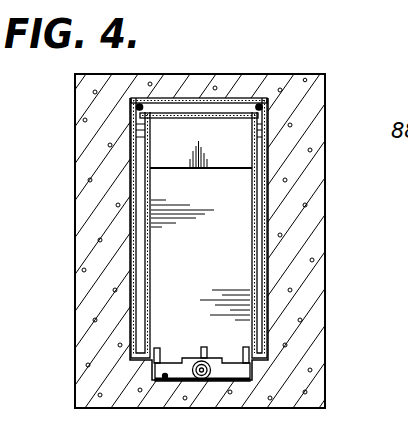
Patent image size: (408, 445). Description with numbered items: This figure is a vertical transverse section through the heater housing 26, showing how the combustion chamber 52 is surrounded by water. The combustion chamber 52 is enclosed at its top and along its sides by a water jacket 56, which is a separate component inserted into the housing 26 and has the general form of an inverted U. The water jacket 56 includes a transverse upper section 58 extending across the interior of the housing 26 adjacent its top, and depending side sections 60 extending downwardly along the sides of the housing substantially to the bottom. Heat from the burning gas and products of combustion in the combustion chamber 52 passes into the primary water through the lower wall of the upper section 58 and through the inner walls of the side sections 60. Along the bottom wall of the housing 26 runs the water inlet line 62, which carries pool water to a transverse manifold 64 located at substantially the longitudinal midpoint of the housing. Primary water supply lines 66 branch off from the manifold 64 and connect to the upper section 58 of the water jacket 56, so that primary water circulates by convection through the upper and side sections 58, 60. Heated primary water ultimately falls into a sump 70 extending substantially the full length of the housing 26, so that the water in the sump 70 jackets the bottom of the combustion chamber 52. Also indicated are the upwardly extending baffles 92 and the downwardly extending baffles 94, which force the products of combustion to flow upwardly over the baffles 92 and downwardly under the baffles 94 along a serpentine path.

The housing 26 is at (304, 84).
The combustion chamber 52 is at (150, 145).
The water jacket 56 is at (216, 97).
The upper section 58 is at (181, 96).
The side sections 60 is at (131, 231).
The water inlet line 62 is at (205, 380).
The manifold 64 is at (246, 374).
The primary water supply lines 66 is at (146, 99).
The sump 70 is at (166, 378).
The upwardly extending baffles 92 is at (238, 191).
The downwardly extending baffles 94 is at (240, 136).